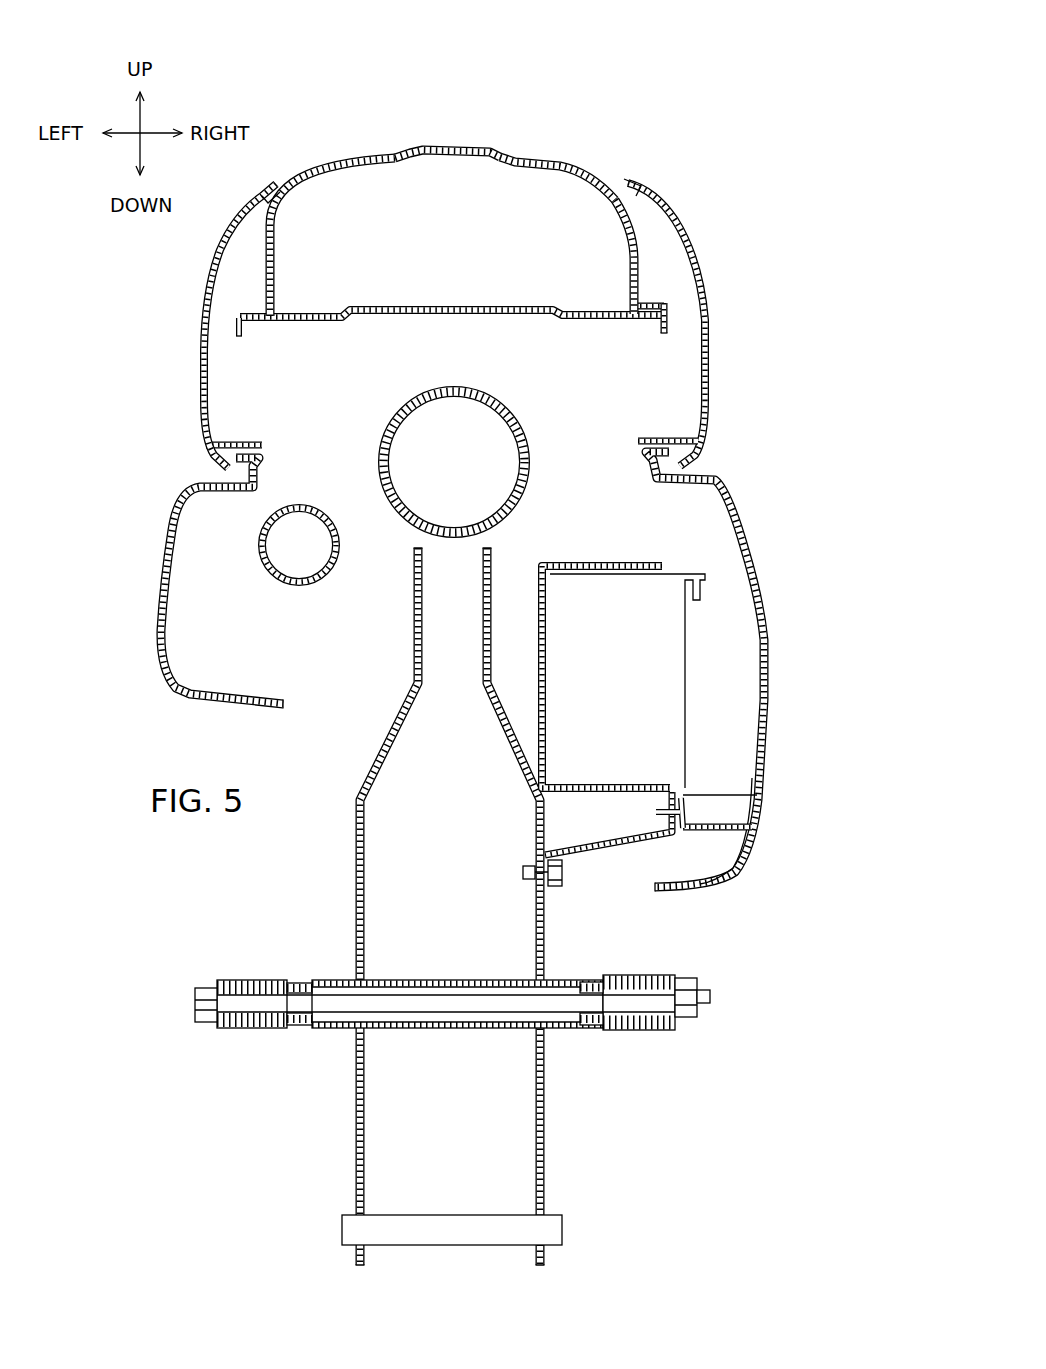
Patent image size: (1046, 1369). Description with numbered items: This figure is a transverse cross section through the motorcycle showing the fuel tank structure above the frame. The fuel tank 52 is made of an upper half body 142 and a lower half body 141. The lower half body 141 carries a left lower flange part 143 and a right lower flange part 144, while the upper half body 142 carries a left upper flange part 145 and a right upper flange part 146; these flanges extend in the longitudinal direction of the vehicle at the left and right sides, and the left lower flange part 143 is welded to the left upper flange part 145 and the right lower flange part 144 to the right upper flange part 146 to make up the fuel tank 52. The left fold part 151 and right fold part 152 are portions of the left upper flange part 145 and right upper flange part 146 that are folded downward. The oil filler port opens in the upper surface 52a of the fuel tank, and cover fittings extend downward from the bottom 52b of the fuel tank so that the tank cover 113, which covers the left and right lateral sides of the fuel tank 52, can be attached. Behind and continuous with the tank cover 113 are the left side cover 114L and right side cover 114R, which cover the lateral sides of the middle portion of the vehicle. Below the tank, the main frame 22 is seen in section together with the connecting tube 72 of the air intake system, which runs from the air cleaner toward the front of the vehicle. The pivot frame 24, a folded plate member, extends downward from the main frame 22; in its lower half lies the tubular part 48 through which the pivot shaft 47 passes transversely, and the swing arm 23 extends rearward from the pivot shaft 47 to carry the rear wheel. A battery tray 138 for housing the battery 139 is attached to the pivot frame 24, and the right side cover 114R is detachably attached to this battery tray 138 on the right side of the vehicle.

The main frame 22 is at (524, 440).
The swing arm 23 is at (658, 1030).
The pivot frame 24 is at (548, 1142).
The pivot shaft 47 is at (622, 1030).
The tubular part 48 is at (583, 1028).
The fuel tank 52 is at (612, 160).
The upper surface of the fuel tank 52a is at (455, 148).
The bottom of the fuel tank 52b is at (470, 319).
The connecting tube 72 is at (258, 540).
The tank cover 113 is at (707, 292).
The left side cover 114L is at (157, 604).
The right side cover 114R is at (769, 637).
The battery tray 138 is at (592, 847).
The battery 139 is at (684, 574).
The lower half body of the fuel tank 141 is at (585, 320).
The upper half body of the fuel tank 142 is at (540, 158).
The left lower flange part 143 is at (260, 332).
The right lower flange part 144 is at (645, 320).
The left upper flange part 145 is at (256, 312).
The right upper flange part 146 is at (650, 305).
The left fold part 151 is at (238, 330).
The right fold part 152 is at (667, 334).